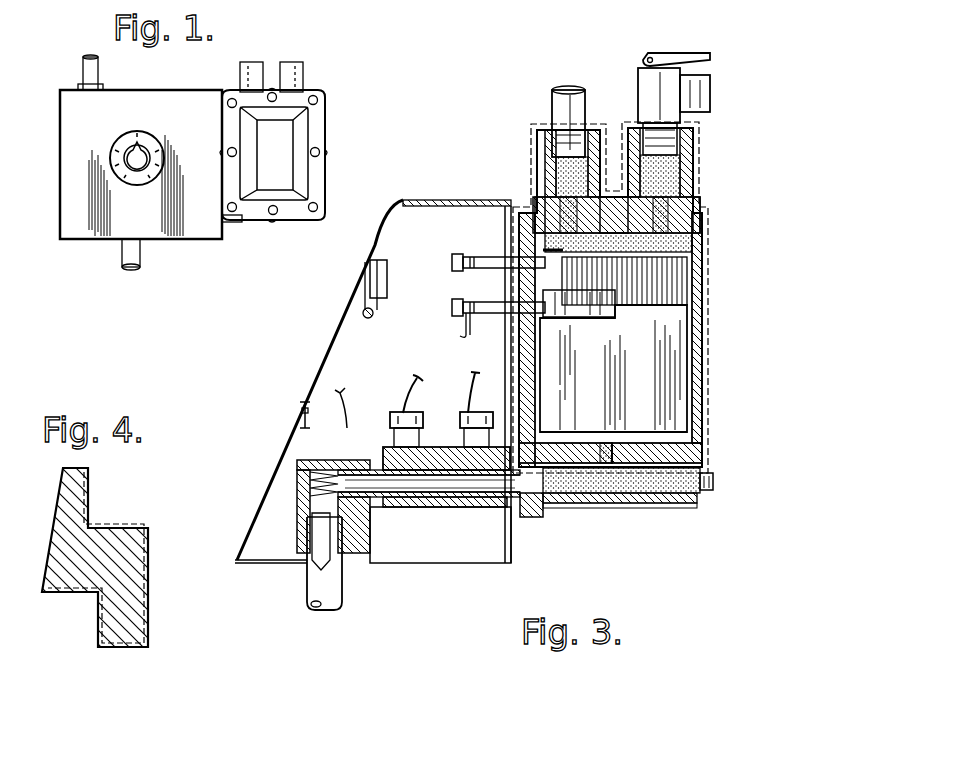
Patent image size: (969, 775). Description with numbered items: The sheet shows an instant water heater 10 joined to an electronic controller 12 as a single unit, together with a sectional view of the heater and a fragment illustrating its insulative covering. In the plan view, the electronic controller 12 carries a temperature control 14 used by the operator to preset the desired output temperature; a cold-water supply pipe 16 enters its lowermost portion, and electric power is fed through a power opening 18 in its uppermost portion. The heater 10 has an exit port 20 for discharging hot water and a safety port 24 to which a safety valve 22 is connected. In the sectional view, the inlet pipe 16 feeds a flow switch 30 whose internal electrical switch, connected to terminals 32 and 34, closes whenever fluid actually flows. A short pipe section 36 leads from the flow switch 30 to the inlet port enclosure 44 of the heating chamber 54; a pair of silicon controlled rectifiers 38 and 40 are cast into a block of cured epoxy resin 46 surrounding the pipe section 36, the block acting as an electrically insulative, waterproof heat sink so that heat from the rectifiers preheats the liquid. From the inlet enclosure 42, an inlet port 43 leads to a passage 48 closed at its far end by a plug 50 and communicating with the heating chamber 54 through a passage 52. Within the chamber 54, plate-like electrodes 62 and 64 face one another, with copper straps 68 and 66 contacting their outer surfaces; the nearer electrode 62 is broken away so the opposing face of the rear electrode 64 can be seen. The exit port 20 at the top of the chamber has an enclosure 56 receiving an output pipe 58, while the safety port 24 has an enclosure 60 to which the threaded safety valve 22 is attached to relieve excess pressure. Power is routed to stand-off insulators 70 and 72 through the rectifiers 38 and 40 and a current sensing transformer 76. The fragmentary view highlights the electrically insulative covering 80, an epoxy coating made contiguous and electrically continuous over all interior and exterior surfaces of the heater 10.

In FIG. 1, the water heater 10 is at (332, 144).
In FIG. 3, the water heater 10 is at (723, 233).
In FIG. 3, the electronic controller 12 is at (250, 563).
In FIG. 1, the temperature control 14 is at (123, 140).
In FIG. 1, the supply pipe 16 is at (140, 260).
In FIG. 3, the supply pipe 16 is at (342, 607).
In FIG. 1, the power opening 18 is at (98, 77).
In FIG. 3, the exit port 20 is at (545, 188).
In FIG. 3, the safety valve 22 is at (712, 80).
In FIG. 3, the safety port 24 is at (690, 202).
In FIG. 3, the flow switch 30 is at (295, 543).
In FIG. 3, the terminal 32 is at (309, 424).
In FIG. 3, the terminal 34 is at (348, 428).
In FIG. 3, the short pipe section 36 is at (387, 510).
In FIG. 3, the silicon controlled rectifier 38 is at (397, 410).
In FIG. 3, the silicon controlled rectifier 40 is at (467, 410).
In FIG. 3, the inlet enclosure 42 is at (568, 506).
In FIG. 3, the inlet port 43 is at (593, 504).
In FIG. 3, the inlet port enclosure 44 is at (550, 512).
In FIG. 3, the block of cured epoxy resin 46 is at (462, 508).
In FIG. 3, the passage 48 is at (657, 506).
In FIG. 3, the plug 50 is at (713, 486).
In FIG. 3, the passage 52 is at (615, 504).
In FIG. 3, the heating chamber 54 is at (704, 390).
In FIG. 1, the exit port enclosure 56 is at (241, 79).
In FIG. 3, the exit port enclosure 56 is at (548, 163).
In FIG. 3, the output pipe 58 is at (558, 105).
In FIG. 1, the safety port enclosure 60 is at (303, 80).
In FIG. 3, the safety port enclosure 60 is at (683, 168).
In FIG. 3, the electrode 62 is at (678, 363).
In FIG. 3, the electrode 64 is at (673, 292).
In FIG. 3, the copper strap 66 is at (712, 248).
In FIG. 3, the copper strap 68 is at (510, 288).
In FIG. 3, the stand-off insulator 70 is at (485, 315).
In FIG. 3, the stand-off insulator 72 is at (480, 254).
In FIG. 3, the current sensing transformer 76 is at (387, 294).
In FIG. 4, the electrically insulative covering 80 is at (139, 528).
In FIG. 3, the electrically insulative covering 80 is at (545, 135).